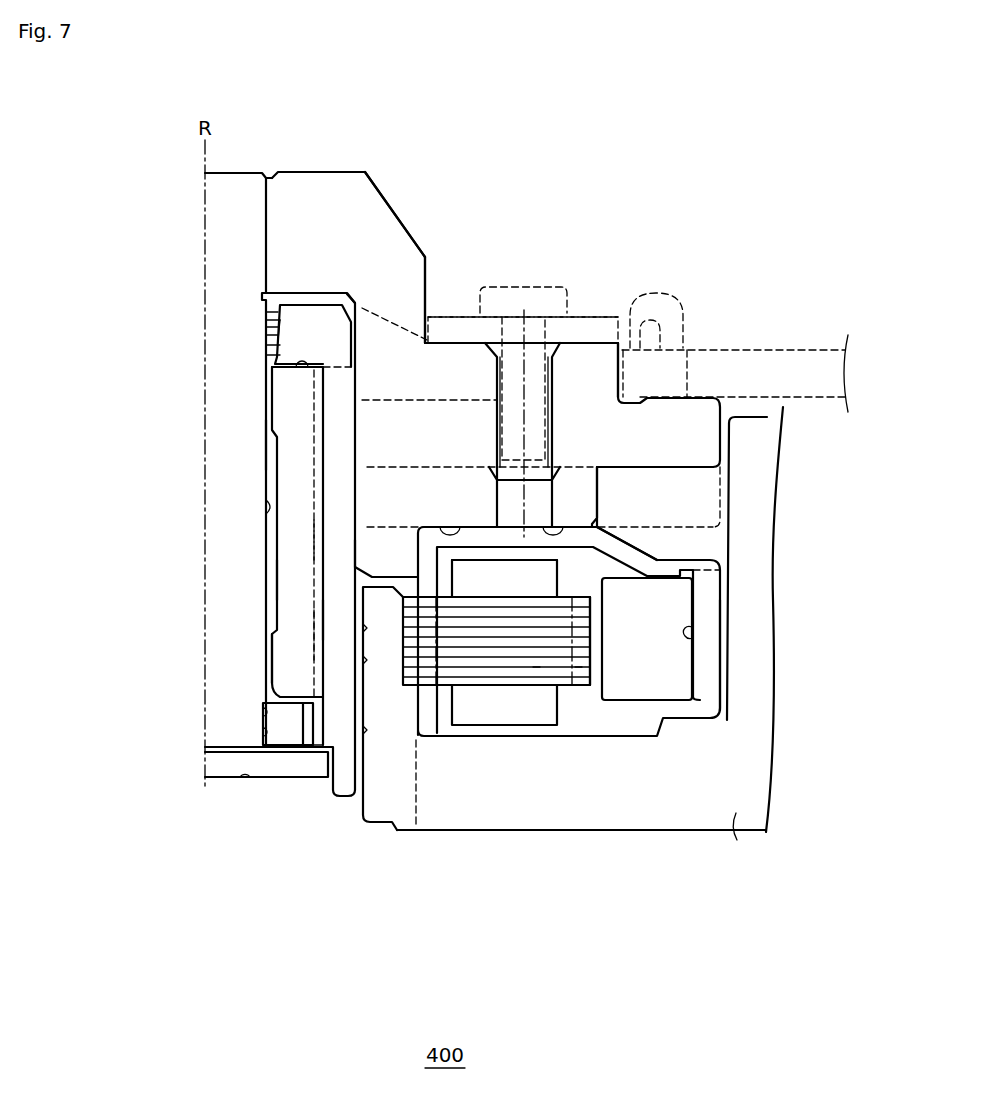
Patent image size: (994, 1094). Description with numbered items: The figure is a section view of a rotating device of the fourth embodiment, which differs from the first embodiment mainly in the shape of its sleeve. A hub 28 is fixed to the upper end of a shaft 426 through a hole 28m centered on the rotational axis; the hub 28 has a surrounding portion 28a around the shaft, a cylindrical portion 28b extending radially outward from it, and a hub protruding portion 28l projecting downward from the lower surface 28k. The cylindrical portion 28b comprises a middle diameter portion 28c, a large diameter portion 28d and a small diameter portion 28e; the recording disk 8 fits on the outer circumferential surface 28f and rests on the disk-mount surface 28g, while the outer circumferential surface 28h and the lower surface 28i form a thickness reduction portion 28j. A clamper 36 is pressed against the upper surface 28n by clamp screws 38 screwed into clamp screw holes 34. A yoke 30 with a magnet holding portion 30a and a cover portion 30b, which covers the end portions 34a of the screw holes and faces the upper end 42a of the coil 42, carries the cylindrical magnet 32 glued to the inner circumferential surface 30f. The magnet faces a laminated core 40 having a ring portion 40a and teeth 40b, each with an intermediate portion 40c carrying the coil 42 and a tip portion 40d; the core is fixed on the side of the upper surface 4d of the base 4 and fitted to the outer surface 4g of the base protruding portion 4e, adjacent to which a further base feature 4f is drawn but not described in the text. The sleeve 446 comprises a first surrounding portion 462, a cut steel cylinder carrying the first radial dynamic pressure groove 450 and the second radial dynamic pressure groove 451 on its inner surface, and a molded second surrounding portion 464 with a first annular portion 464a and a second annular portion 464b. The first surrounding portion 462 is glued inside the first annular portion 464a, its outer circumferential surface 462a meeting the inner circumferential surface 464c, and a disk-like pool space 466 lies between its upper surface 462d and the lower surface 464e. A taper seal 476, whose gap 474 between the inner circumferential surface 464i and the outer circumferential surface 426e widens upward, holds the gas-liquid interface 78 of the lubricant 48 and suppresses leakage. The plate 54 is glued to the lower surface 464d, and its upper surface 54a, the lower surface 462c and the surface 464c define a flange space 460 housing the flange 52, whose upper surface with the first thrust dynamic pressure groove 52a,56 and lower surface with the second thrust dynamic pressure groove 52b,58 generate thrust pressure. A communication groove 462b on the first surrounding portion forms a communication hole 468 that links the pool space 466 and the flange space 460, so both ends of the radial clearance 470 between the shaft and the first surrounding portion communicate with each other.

The base 4 is at (736, 842).
The upper surface of the base 4d is at (615, 733).
The base protruding portion 4e is at (393, 790).
The fork slot 4f is at (383, 825).
The outer surface of the base protruding portion 4g is at (397, 666).
The recording disk 8 is at (766, 350).
The hub 28 is at (344, 260).
The surrounding portion 28a is at (352, 220).
The cylindrical portion 28b is at (551, 93).
The middle diameter portion 28c is at (446, 367).
The large diameter portion 28d is at (455, 433).
The small diameter portion 28e is at (467, 447).
The outer circumferential surface of the middle diameter portion 28f is at (630, 368).
The disk-mount surface 28g is at (667, 370).
The outer circumferential surface of the small diameter portion 28h is at (597, 487).
The lower surface of the large diameter portion 28i is at (675, 468).
The thickness reduction portion 28j is at (690, 507).
The lower surface of the cylindrical portion 28k is at (447, 527).
The hub protruding portion 28l is at (388, 557).
The hole 28m is at (265, 203).
The upper surface of the cylindrical portion 28n is at (612, 370).
The yoke 30 is at (707, 607).
The magnet holding portion 30a is at (707, 655).
The cover portion 30b is at (602, 534).
The inner circumferential surface of the magnet holding portion 30f is at (690, 636).
The cylindrical magnet 32 is at (643, 677).
The clamp screw holes 34 is at (538, 375).
The end portions of the clamp screw holes 34a is at (567, 527).
The clamper 36 is at (584, 310).
The clamp screws 38 is at (517, 282).
The laminated core 40 is at (449, 662).
The ring portion 40a is at (433, 700).
The teeth 40b is at (520, 968).
The intermediate portion 40c is at (533, 667).
The tip portion 40d is at (578, 667).
The coil 42 is at (477, 705).
The upper end of the coil 42a is at (511, 556).
The lubricant 48 is at (268, 345).
The flange 52 is at (265, 712).
The upper surface of the flange / first thrust dynamic pressure groove 52a,56 is at (290, 697).
The lower surface of the flange / second thrust dynamic pressure groove 52b,58 is at (285, 747).
The plate 54 is at (222, 766).
The upper surface of the plate 54a is at (244, 778).
The gas-liquid interface 78 is at (267, 326).
The shaft 426 is at (218, 196).
The outer circumferential surface of the shaft 426e is at (266, 507).
The sleeve 446 is at (85, 444).
The first radial dynamic pressure groove 450 is at (270, 420).
The second radial dynamic pressure groove 451 is at (272, 665).
The flange space 460 is at (265, 731).
The first surrounding portion 462 is at (287, 402).
The outer circumferential surface of the first surrounding portion 462a is at (332, 531).
The communication groove 462b is at (384, 400).
The lower surface of the first surrounding portion 462c is at (303, 747).
The upper surface of the first surrounding portion 462d is at (290, 300).
The second surrounding portion 464 is at (333, 395).
The first annular portion 464a is at (337, 617).
The second annular portion 464b is at (312, 295).
The inner circumferential surface of the first annular portion 464c is at (400, 297).
The lower surface of the first annular portion 464d is at (325, 748).
The lower surface of the second annular portion 464e is at (302, 300).
The inner circumferential surface of the second annular portion 464i is at (268, 322).
The pool space 466 is at (296, 369).
The communication hole 468 is at (317, 637).
The radial clearance 470 is at (270, 576).
The gap 474 is at (268, 312).
The taper seal 476 is at (268, 352).